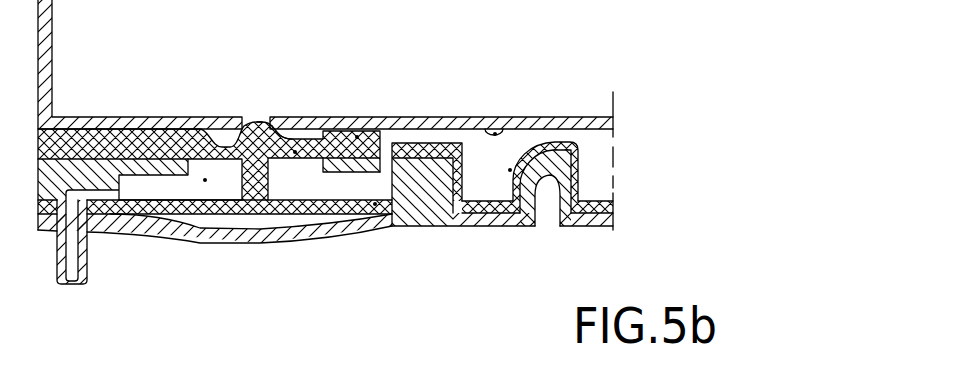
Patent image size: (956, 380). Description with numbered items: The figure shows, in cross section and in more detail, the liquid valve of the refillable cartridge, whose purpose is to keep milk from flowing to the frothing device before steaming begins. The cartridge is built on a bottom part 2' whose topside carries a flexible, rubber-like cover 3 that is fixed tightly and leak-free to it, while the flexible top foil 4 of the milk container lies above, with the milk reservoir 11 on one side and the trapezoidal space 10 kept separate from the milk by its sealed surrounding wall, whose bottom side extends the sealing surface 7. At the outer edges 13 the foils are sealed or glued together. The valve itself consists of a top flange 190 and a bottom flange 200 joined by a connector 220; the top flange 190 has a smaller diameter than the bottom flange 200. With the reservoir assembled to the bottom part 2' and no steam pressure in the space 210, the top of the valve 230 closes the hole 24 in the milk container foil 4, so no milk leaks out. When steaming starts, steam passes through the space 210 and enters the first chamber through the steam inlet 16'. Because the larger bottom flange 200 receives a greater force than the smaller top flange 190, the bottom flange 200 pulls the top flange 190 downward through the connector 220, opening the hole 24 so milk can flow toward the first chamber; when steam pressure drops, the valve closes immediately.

The cover 3 is at (100, 140).
The top foil 4 is at (160, 122).
The top of the valve 230 is at (256, 122).
The milk reservoir 11 is at (263, 118).
The hole 24 is at (295, 151).
The top flange 190 is at (297, 151).
The trapezoidal space 10 is at (357, 136).
The outer edges 13 is at (385, 166).
The sealing surface 7 is at (511, 169).
The space 210 is at (205, 181).
The connector 220 is at (258, 186).
The bottom flange 200 is at (375, 205).
The bottom part 2' is at (325, 219).
The steam inlet 16' is at (79, 274).